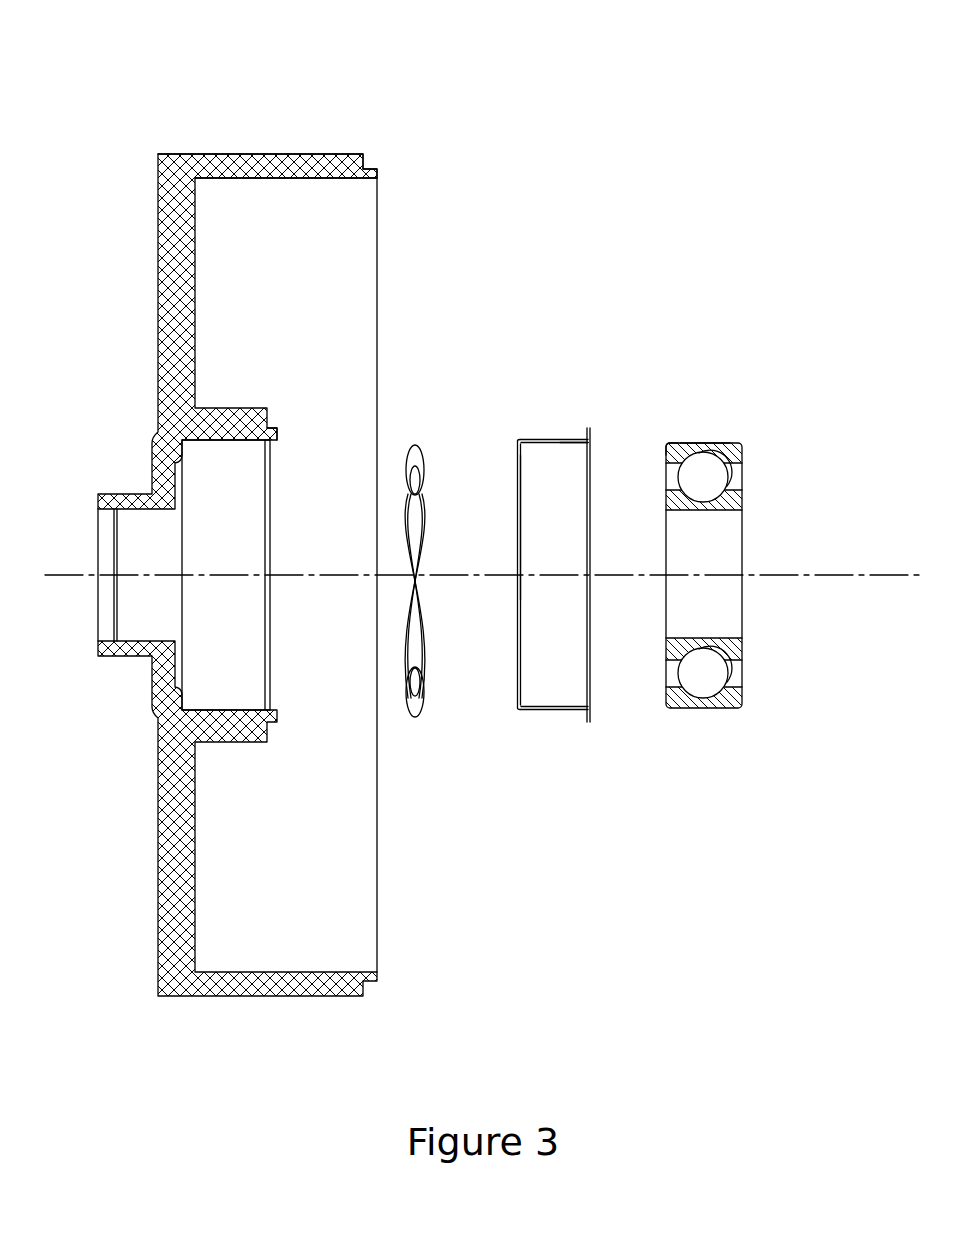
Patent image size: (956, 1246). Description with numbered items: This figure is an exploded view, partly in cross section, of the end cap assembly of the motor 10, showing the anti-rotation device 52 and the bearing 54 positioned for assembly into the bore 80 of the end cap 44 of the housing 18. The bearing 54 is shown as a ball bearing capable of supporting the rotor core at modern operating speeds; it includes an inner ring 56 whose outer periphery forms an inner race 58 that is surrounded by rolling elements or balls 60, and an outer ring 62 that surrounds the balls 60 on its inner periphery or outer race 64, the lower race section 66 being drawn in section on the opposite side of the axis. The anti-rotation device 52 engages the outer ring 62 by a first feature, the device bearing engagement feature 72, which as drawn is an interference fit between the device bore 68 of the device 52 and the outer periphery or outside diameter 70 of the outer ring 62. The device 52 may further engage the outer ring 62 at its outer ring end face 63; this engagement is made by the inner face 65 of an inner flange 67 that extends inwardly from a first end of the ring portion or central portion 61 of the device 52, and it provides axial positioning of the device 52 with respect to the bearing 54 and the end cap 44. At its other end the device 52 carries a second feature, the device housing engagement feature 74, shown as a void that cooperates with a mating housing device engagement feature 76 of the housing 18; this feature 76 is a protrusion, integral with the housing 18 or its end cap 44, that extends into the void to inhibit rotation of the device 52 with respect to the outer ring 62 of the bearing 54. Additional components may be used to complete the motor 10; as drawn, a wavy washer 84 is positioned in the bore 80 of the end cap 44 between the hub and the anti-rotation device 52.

The motor 10 is at (166, 95).
The motor assembly housing 18 is at (208, 132).
The end cap 44 is at (265, 148).
The anti-rotation device 52 is at (593, 403).
The bearing 54 is at (735, 728).
The inner ring 56 is at (728, 500).
The inner race 58 is at (722, 668).
The balls 60 is at (683, 672).
The central portion 61 is at (549, 439).
The outer ring 62 is at (742, 450).
The outer ring end face 63 is at (672, 444).
The outer race 64 is at (718, 470).
The inner face 65 is at (521, 462).
The outer race 66 is at (702, 645).
The inner flange 67 is at (517, 455).
The device bore 68 is at (565, 444).
The outside diameter 70 is at (706, 446).
The device bearing engagement feature 72 is at (553, 479).
The device housing engagement feature 74 is at (604, 727).
The housing device engagement feature 76 is at (278, 437).
The bore 80 is at (240, 678).
The wavy washer 84 is at (418, 445).